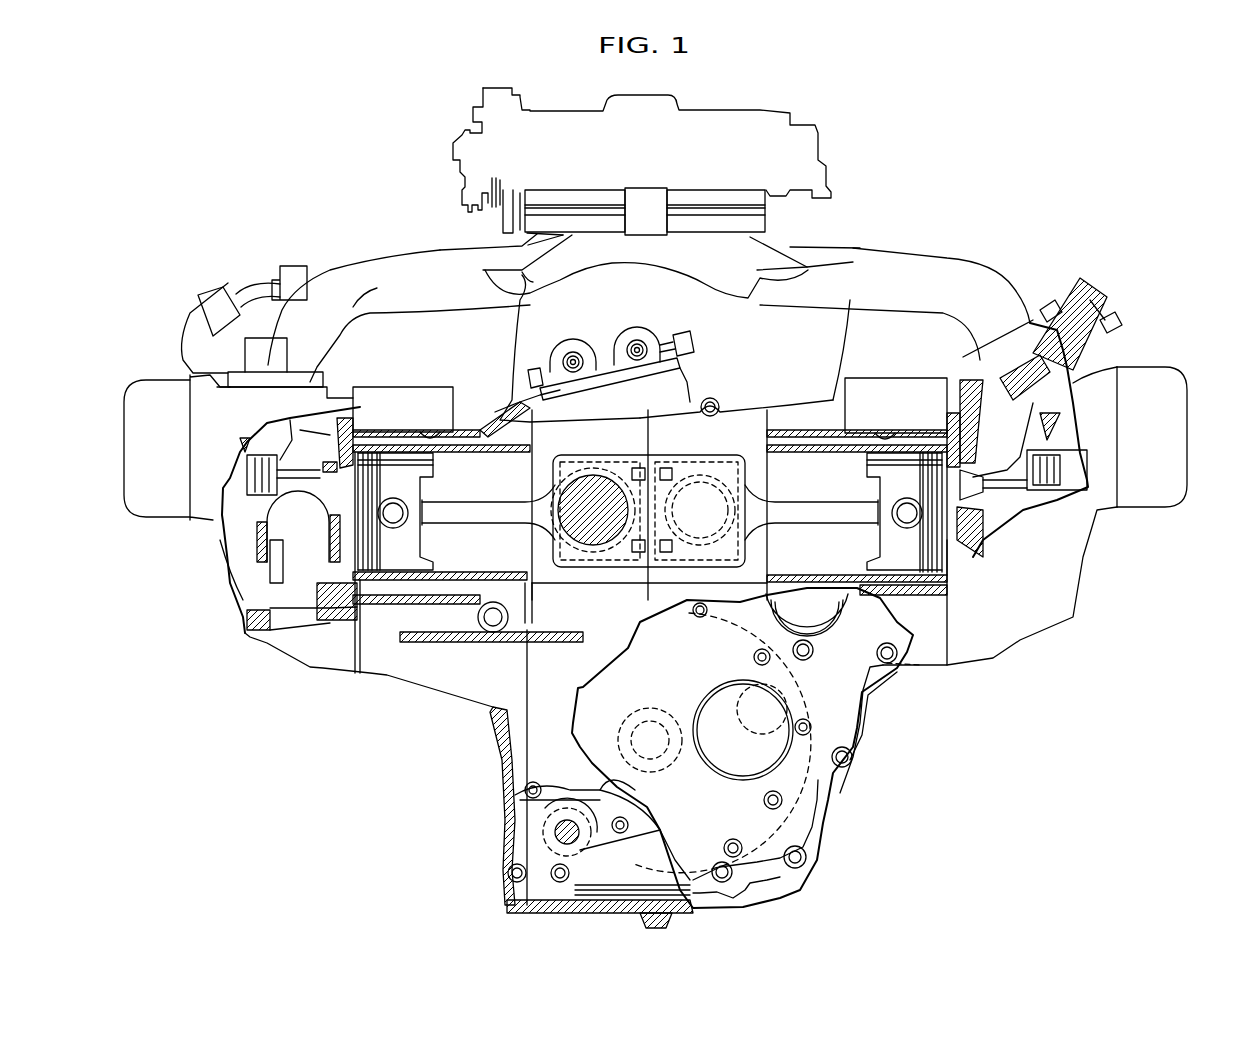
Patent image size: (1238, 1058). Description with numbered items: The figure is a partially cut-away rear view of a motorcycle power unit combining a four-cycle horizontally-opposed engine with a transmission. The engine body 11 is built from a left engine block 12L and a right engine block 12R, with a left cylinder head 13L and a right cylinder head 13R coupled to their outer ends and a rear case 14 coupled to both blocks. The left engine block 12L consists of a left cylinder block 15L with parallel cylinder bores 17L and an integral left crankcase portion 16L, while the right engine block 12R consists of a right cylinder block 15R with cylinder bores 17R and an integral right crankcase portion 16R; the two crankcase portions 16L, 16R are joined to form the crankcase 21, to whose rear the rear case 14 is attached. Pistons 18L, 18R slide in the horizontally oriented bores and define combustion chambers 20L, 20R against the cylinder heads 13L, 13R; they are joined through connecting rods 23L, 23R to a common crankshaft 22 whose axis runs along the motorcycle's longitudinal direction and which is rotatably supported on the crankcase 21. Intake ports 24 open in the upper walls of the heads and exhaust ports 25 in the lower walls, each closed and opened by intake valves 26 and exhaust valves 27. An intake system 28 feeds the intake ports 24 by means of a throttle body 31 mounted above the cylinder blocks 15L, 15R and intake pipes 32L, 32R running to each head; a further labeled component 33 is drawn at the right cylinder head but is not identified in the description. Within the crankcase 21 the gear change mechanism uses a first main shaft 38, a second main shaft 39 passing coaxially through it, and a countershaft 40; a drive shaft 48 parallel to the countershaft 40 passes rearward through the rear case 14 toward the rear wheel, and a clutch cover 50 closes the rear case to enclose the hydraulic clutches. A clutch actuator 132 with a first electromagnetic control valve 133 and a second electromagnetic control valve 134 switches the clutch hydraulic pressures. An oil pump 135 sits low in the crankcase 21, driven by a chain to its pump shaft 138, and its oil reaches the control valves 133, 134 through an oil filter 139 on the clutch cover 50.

The engine body 11 is at (900, 673).
The left engine block 12L is at (477, 413).
The right engine block 12R is at (755, 388).
The left cylinder head 13L is at (262, 650).
The right cylinder head 13R is at (1013, 638).
The rear case 14 is at (730, 815).
The left cylinder block 15L is at (355, 405).
The right cylinder block 15R is at (836, 395).
The left crankcase portion 16L is at (525, 365).
The right crankcase portion 16R is at (713, 388).
The cylinder bores 17L is at (430, 440).
The cylinder bores 17R is at (882, 438).
The pistons 18L is at (390, 572).
The pistons 18R is at (930, 555).
The combustion chambers 20L is at (360, 537).
The combustion chambers 20R is at (945, 535).
The crankcase 21 is at (495, 790).
The crankshaft 22 is at (634, 578).
The connecting rod 23L is at (447, 507).
The connecting rod 23R is at (843, 505).
The intake ports 24 is at (1050, 413).
The exhaust ports 25 is at (274, 585).
The intake valves 26 is at (990, 490).
The exhaust valves 27 is at (307, 417).
The intake system 28 is at (818, 247).
The throttle body 31 is at (803, 133).
The intake pipe 32L is at (413, 265).
The intake pipe 32R is at (876, 265).
The fuel injector 33 is at (1073, 367).
The first main shaft 38 is at (648, 703).
The second main shaft 39 is at (640, 717).
The countershaft 40 is at (793, 703).
The drive shaft 48 is at (712, 636).
The clutch cover 50 is at (808, 803).
The clutch actuator 132 is at (655, 328).
The first electromagnetic control valve 133 is at (638, 322).
The second electromagnetic control valve 134 is at (575, 338).
The oil pump 135 is at (643, 793).
The pump shaft 138 is at (555, 833).
The oil filter 139 is at (708, 745).